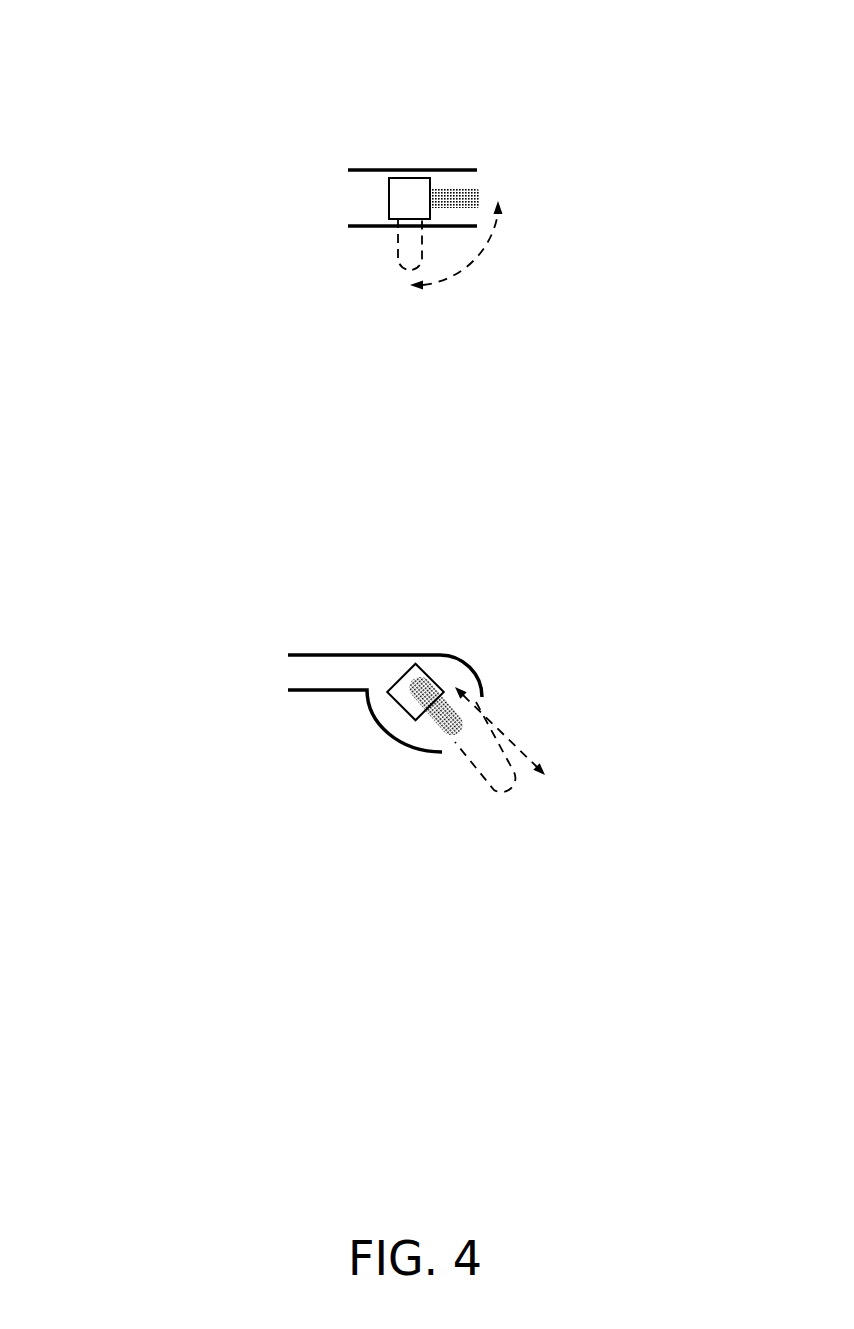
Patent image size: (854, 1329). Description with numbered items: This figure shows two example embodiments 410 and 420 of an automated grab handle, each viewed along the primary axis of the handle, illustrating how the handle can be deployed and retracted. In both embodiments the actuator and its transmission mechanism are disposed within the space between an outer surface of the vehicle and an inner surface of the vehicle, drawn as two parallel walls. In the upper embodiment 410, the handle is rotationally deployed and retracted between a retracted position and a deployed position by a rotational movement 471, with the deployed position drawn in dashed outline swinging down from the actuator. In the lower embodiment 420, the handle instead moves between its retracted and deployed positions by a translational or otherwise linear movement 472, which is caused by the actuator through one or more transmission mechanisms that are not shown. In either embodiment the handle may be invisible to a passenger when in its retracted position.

The embodiment 410 is at (128, 39).
The embodiment 420 is at (128, 537).
The rotational movement 471 is at (559, 250).
The translational movement 472 is at (605, 731).